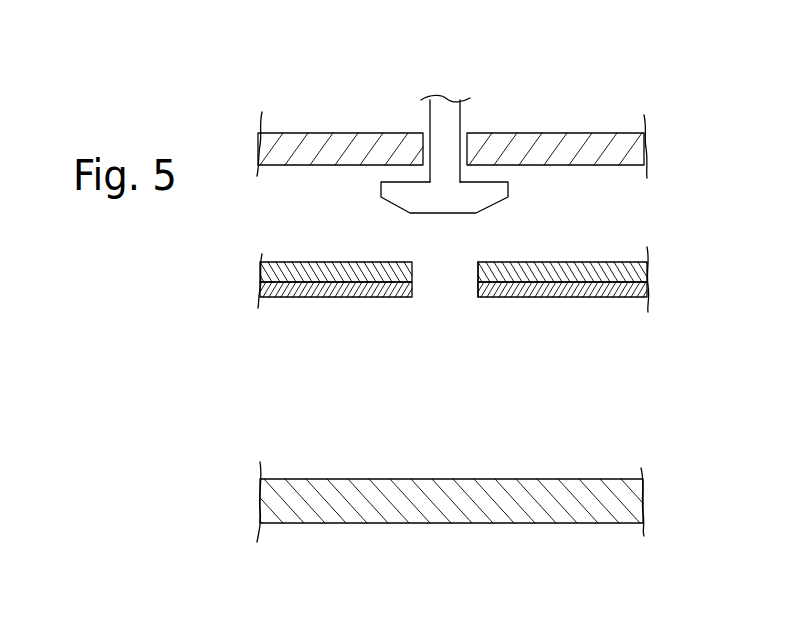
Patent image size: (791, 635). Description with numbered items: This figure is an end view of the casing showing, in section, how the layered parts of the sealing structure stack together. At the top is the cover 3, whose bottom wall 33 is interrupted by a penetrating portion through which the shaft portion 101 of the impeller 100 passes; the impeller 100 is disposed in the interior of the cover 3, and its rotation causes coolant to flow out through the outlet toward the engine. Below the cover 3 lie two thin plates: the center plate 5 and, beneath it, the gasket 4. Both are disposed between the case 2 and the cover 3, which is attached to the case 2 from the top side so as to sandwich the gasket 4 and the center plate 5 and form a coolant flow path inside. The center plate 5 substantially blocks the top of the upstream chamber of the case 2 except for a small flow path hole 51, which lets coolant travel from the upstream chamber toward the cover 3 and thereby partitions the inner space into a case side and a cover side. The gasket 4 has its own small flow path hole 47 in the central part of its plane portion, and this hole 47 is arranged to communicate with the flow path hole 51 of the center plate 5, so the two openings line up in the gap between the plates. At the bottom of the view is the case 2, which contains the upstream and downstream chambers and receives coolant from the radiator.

The case 2 is at (318, 541).
The cover 3 is at (461, 124).
The gasket 4 is at (489, 293).
The center plate 5 is at (488, 252).
The bottom wall 33 is at (302, 133).
The flow path hole 47 is at (478, 286).
The flow path hole 51 is at (478, 272).
The impeller 100 is at (407, 194).
The shaft portion 101 is at (448, 110).